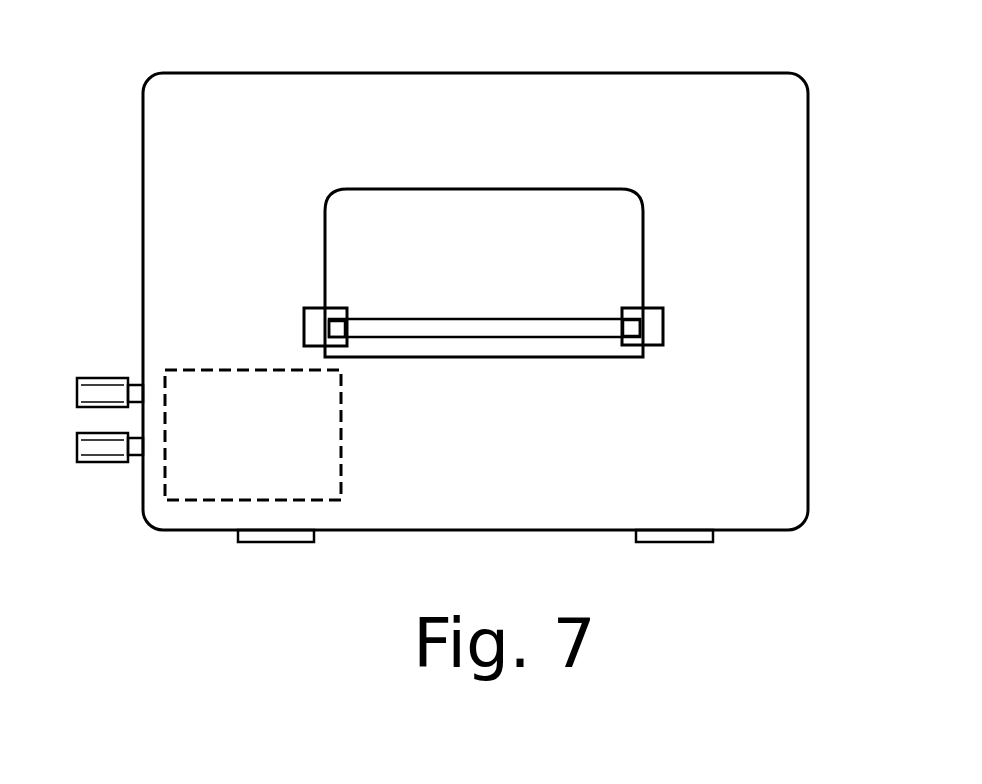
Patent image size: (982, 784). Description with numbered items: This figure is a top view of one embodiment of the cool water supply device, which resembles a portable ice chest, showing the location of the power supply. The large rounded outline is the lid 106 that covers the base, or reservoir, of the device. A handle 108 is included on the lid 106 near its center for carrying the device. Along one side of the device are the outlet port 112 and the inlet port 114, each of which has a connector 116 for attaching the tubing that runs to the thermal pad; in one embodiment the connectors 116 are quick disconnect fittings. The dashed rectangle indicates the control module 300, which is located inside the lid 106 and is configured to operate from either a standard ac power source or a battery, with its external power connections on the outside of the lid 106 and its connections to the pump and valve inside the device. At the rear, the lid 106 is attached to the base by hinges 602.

The lid 106 is at (662, 70).
The handle 108 is at (540, 318).
The outlet port 112 is at (137, 378).
The inlet port 114 is at (135, 462).
The connectors 116 is at (85, 377).
The control module 300 is at (342, 443).
The hinges 602 is at (283, 543).